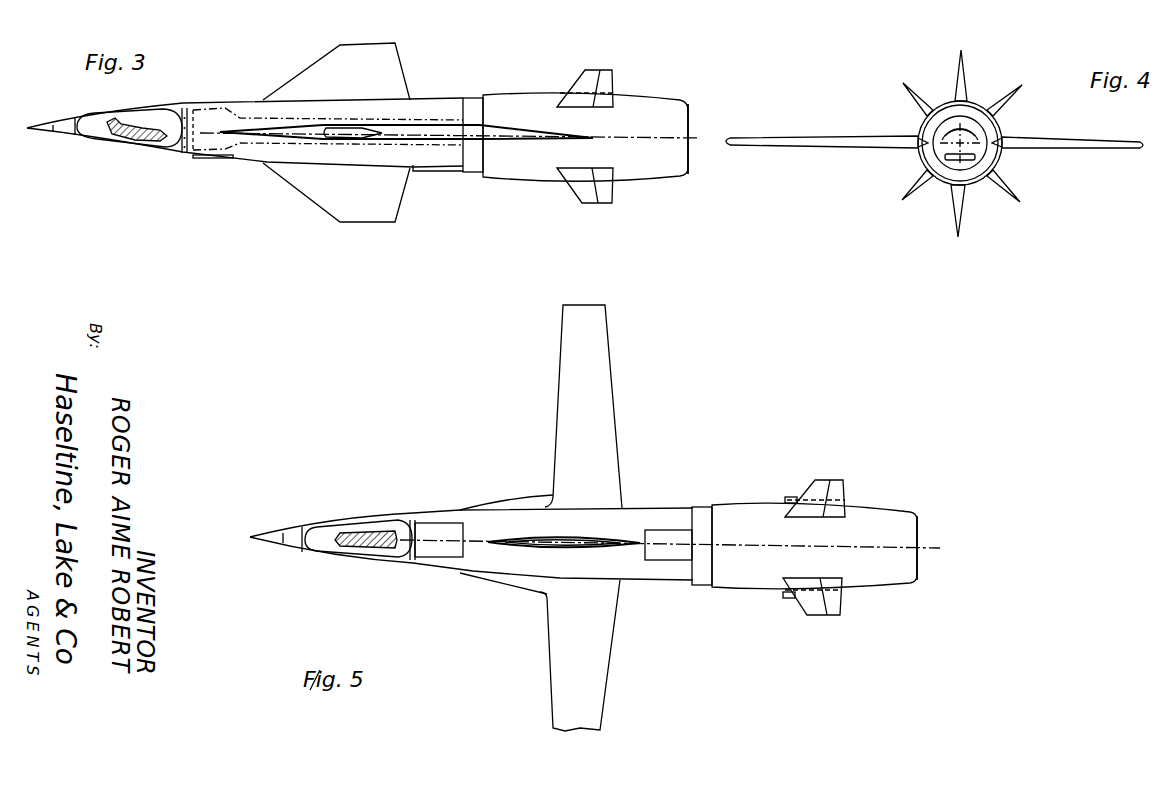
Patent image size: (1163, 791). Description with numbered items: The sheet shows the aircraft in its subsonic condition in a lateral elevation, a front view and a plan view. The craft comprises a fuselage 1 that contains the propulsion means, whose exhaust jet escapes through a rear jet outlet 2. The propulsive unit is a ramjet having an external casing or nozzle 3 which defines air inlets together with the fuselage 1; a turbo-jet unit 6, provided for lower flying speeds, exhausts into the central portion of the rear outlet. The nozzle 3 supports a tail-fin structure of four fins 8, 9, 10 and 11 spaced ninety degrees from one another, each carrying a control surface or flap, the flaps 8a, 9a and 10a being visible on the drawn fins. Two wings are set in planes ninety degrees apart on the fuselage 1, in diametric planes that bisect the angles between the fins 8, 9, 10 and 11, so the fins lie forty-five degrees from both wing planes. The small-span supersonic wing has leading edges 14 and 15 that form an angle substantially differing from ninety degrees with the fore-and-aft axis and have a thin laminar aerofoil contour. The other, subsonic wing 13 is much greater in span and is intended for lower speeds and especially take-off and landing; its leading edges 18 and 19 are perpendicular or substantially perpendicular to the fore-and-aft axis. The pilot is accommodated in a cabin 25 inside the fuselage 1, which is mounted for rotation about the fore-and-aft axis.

In FIG. 3, the fuselage 1 is at (363, 135).
In FIG. 4, the fuselage 1 is at (985, 134).
In FIG. 5, the fuselage 1 is at (595, 544).
In FIG. 3, the rear jet outlet 2 is at (690, 112).
In FIG. 5, the rear jet outlet 2 is at (918, 533).
In FIG. 3, the external casing or nozzle 3 is at (585, 137).
In FIG. 5, the external casing or nozzle 3 is at (814, 546).
In FIG. 3, the turbo-jet unit 6 is at (213, 148).
In FIG. 4, the fin 8 is at (907, 97).
In FIG. 5, the fin 8 is at (820, 488).
In FIG. 5, the control surface or flap 8a is at (837, 493).
In FIG. 3, the fin 9 is at (580, 83).
In FIG. 4, the fin 9 is at (1015, 92).
In FIG. 5, the fin 9 is at (807, 607).
In FIG. 3, the control surface or flap 9a is at (607, 88).
In FIG. 5, the control surface or flap 9a is at (838, 607).
In FIG. 3, the fin 10 is at (577, 187).
In FIG. 4, the fin 10 is at (1013, 187).
In FIG. 3, the control surface or flap 10a is at (607, 190).
In FIG. 4, the fin 11 is at (915, 182).
In FIG. 4, the subsonic wing 13 is at (845, 148).
In FIG. 3, the leading edge 14 is at (300, 74).
In FIG. 4, the leading edge 14 is at (967, 72).
In FIG. 3, the leading edge 15 is at (305, 196).
In FIG. 4, the leading edge 15 is at (965, 215).
In FIG. 5, the leading edge 18 is at (557, 407).
In FIG. 5, the leading edge 19 is at (547, 657).
In FIG. 3, the cabin 25 is at (157, 122).
In FIG. 5, the cabin 25 is at (320, 542).